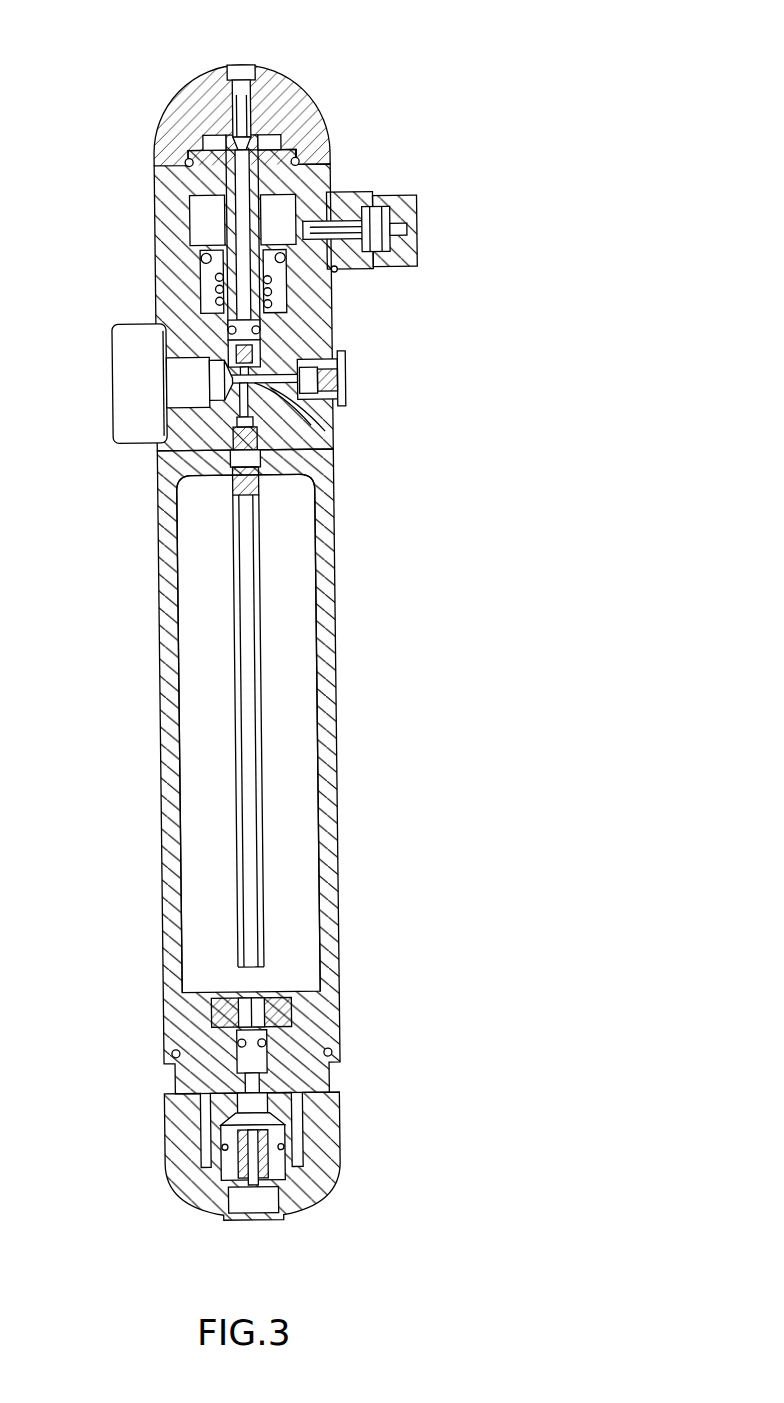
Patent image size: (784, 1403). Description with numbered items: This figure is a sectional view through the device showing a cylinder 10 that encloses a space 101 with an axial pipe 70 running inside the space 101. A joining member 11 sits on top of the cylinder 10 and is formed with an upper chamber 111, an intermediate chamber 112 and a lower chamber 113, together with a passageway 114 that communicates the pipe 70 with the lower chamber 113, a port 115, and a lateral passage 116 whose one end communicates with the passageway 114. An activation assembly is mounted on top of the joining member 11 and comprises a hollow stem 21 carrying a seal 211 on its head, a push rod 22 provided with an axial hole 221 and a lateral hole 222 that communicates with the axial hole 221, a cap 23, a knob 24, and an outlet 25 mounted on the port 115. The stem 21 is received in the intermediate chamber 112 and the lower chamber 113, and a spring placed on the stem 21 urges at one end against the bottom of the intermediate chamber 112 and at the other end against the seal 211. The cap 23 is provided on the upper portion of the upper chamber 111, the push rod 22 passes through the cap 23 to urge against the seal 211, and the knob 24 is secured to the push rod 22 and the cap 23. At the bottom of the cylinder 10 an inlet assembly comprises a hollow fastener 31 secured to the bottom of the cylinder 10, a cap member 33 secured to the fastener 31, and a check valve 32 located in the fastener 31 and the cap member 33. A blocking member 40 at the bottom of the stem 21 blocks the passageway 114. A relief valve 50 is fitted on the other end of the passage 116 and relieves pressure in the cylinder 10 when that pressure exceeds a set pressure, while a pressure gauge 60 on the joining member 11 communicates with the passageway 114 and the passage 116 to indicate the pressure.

The cylinder 10 is at (327, 563).
The joining member 11 is at (318, 320).
The hollow stem 21 is at (222, 305).
The push rod 22 is at (228, 145).
The cap 23 is at (300, 158).
The knob 24 is at (270, 80).
The outlet 25 is at (352, 205).
The hollow fastener 31 is at (308, 1018).
The check valve 32 is at (243, 1147).
The cap member 33 is at (328, 1130).
The blocking member 40 is at (233, 358).
The relief valve 50 is at (347, 367).
The pressure gauge 60 is at (130, 357).
The pipe 70 is at (253, 827).
The space 101 is at (300, 665).
The upper chamber 111 is at (198, 213).
The intermediate chamber 112 is at (205, 283).
The lower chamber 113 is at (282, 422).
The passageway 114 is at (243, 407).
The port 115 is at (316, 166).
The lateral passage 116 is at (302, 405).
The seal 211 is at (202, 253).
The axial hole 221 is at (332, 264).
The lateral hole 222 is at (188, 158).